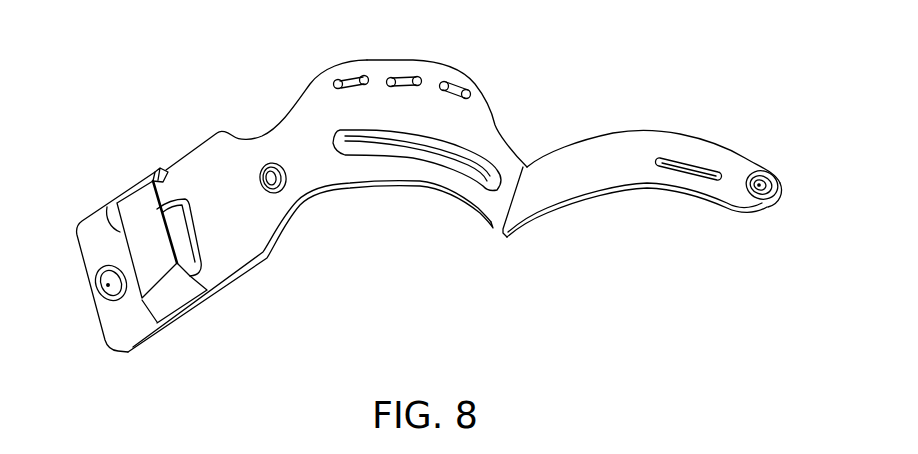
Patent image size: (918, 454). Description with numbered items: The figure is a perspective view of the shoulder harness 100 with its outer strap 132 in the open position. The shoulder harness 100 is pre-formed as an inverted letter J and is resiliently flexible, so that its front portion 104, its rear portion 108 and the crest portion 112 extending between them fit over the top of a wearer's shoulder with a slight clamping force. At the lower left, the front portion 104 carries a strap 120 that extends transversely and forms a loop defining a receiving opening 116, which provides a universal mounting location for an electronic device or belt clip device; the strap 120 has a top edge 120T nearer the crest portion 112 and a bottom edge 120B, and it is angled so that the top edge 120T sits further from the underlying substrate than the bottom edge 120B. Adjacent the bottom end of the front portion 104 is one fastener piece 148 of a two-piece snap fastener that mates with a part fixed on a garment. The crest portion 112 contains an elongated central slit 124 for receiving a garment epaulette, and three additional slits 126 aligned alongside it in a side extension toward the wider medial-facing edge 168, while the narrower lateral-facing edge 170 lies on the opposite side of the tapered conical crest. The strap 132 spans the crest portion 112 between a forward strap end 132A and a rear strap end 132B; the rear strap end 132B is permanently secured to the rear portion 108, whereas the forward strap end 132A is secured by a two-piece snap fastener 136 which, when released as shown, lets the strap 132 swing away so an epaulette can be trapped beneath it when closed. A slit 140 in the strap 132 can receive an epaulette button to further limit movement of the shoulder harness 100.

The shoulder harness 100 is at (118, 62).
The front portion 104 is at (176, 343).
The rear portion 108 is at (495, 270).
The crest portion 112 is at (378, 222).
The receiving opening 116 is at (193, 248).
The strap 120 is at (143, 203).
The top edge 120T is at (158, 168).
The bottom edge 120B is at (112, 229).
The slit 124 is at (473, 150).
The additional slits 126 is at (350, 78).
The strap 132 is at (603, 163).
The forward strap end 132A is at (750, 207).
The rear strap end 132B is at (515, 226).
The fastener 136 is at (273, 162).
The slit 140 is at (687, 163).
The fastener piece 148 is at (96, 285).
The medial-facing edge 168 is at (478, 78).
The lateral-facing edge 170 is at (452, 210).